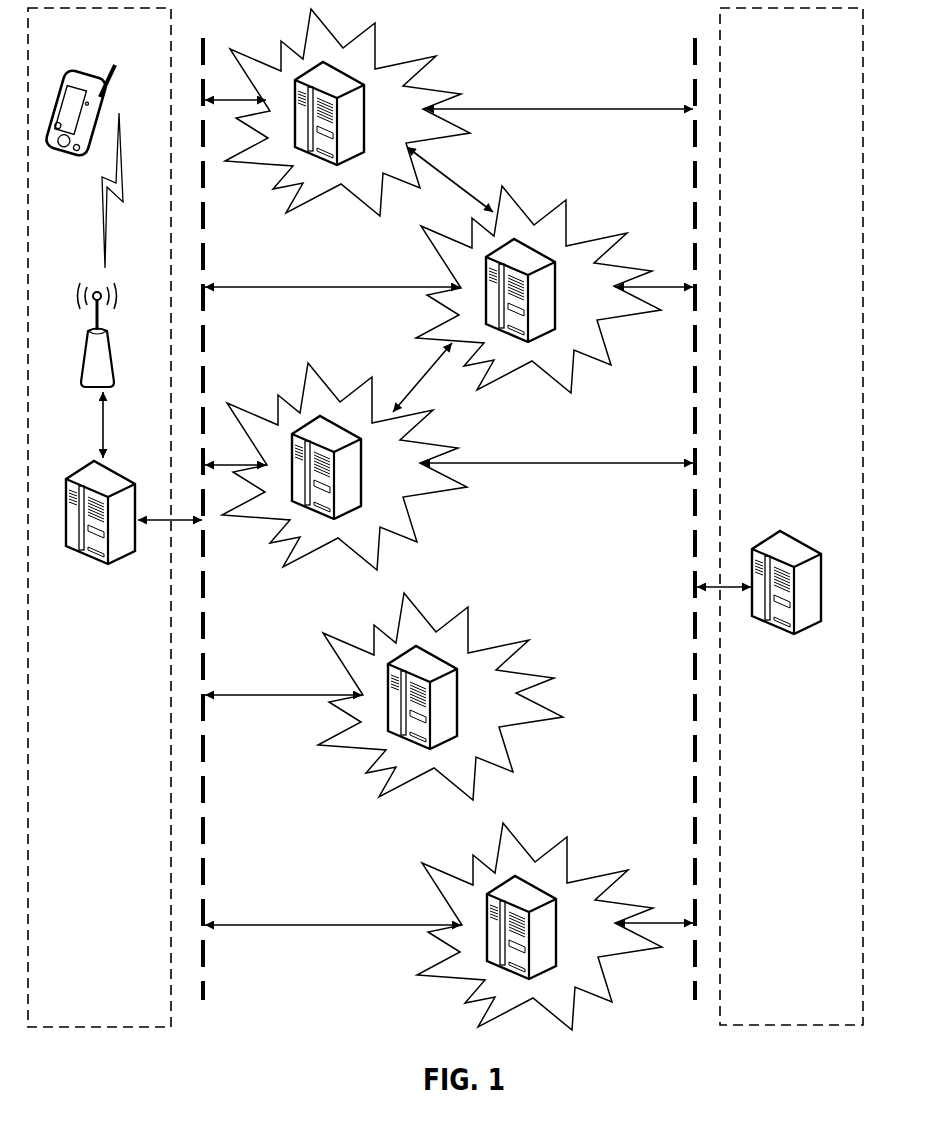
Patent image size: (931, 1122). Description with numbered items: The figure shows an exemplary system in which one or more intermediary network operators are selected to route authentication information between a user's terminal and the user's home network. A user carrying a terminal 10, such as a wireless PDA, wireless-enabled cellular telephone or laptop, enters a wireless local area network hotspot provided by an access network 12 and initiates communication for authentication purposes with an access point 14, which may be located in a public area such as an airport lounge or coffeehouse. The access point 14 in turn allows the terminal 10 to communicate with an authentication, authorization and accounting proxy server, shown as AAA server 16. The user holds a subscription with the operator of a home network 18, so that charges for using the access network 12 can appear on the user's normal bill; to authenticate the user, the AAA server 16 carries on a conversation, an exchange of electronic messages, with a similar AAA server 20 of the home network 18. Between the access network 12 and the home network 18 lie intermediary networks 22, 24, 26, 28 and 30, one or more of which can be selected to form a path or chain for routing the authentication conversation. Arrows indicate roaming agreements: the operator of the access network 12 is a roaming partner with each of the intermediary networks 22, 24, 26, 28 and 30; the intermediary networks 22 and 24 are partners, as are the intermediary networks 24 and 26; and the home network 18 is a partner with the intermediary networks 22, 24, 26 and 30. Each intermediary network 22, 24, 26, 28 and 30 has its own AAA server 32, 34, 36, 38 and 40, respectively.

The terminal 10 is at (72, 72).
The access network 12 is at (108, 1030).
The access point 14 is at (84, 358).
The AAA server 16 is at (84, 470).
The home network 18 is at (775, 1027).
The AAA server 20 is at (800, 533).
The intermediary network 22 is at (358, 198).
The intermediary network 24 is at (568, 223).
The intermediary network 26 is at (417, 493).
The intermediary network 28 is at (355, 748).
The intermediary network 30 is at (568, 852).
The AAA server 32 is at (368, 115).
The AAA server 34 is at (558, 287).
The AAA server 36 is at (364, 473).
The AAA server 38 is at (460, 692).
The AAA server 40 is at (558, 928).